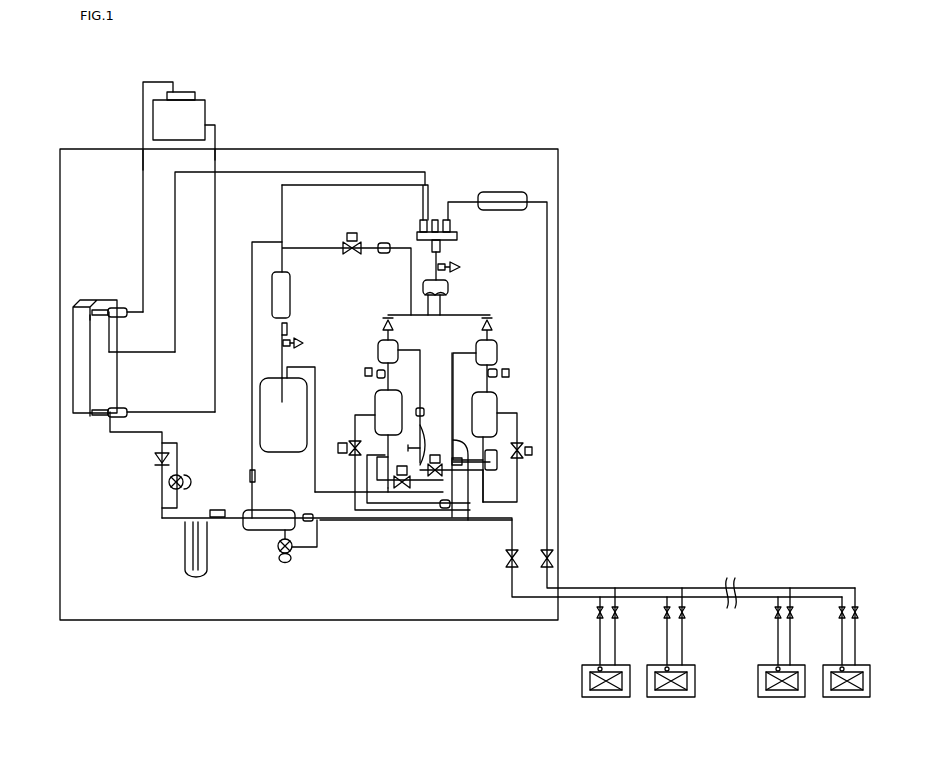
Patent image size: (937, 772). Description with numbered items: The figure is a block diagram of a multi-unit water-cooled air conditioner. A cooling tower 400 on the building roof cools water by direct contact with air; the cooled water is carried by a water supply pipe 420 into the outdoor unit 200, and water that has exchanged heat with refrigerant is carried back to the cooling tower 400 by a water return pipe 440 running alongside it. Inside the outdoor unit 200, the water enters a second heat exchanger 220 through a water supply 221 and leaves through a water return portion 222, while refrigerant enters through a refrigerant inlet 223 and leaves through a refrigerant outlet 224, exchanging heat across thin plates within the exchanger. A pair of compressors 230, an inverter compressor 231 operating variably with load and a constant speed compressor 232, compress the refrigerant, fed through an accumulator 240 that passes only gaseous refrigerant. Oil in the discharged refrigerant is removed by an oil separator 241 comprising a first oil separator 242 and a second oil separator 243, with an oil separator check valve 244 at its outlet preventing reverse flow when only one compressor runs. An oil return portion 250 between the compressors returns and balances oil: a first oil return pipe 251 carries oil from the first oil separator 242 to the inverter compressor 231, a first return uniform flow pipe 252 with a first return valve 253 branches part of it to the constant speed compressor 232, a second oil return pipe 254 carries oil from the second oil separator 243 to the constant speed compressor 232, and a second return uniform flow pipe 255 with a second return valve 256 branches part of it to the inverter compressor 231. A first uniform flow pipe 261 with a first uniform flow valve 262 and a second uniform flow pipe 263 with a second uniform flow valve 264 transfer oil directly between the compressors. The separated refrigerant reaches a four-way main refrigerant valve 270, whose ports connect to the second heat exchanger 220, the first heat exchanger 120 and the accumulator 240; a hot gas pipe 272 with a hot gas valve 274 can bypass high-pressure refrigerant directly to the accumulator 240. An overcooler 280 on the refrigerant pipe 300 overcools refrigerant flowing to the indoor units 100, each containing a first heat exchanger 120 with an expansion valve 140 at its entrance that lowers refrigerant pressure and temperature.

The indoor unit 100 is at (617, 697).
The first heat exchanger 120 is at (600, 697).
The expansion valve 140 is at (598, 666).
The outdoor unit 200 is at (103, 622).
The second heat exchanger 220 is at (82, 342).
The water supply 221 is at (125, 409).
The water return portion 222 is at (118, 308).
The refrigerant inlet 223 is at (107, 317).
The refrigerant outlet 224 is at (97, 414).
The compressors 230 is at (637, 382).
The inverter compressor 231 is at (395, 402).
The constant speed compressor 232 is at (490, 425).
The accumulator 240 is at (293, 453).
The oil separator 241 is at (597, 335).
The first oil separator 242 is at (398, 345).
The second oil separator 243 is at (490, 353).
The oil separator check valve 244 is at (490, 316).
The oil return portion 250 is at (335, 572).
The first oil return pipe 251 is at (462, 466).
The first return uniform flow pipe 252 is at (380, 486).
The first return valve 253 is at (400, 495).
The second oil return pipe 254 is at (428, 480).
The second return uniform flow pipe 255 is at (500, 470).
The second return valve 256 is at (440, 478).
The first uniform flow pipe 261 is at (517, 485).
The first uniform flow valve 262 is at (532, 453).
The second uniform flow pipe 263 is at (354, 415).
The second uniform flow valve 264 is at (342, 447).
The main refrigerant valve 270 is at (462, 237).
The hot gas pipe 272 is at (307, 248).
The hot gas valve 274 is at (354, 256).
The overcooler 280 is at (262, 545).
The refrigerant pipe 300 is at (743, 587).
The cooling tower 400 is at (205, 103).
The water supply pipe 420 is at (215, 158).
The water return pipe 440 is at (143, 172).